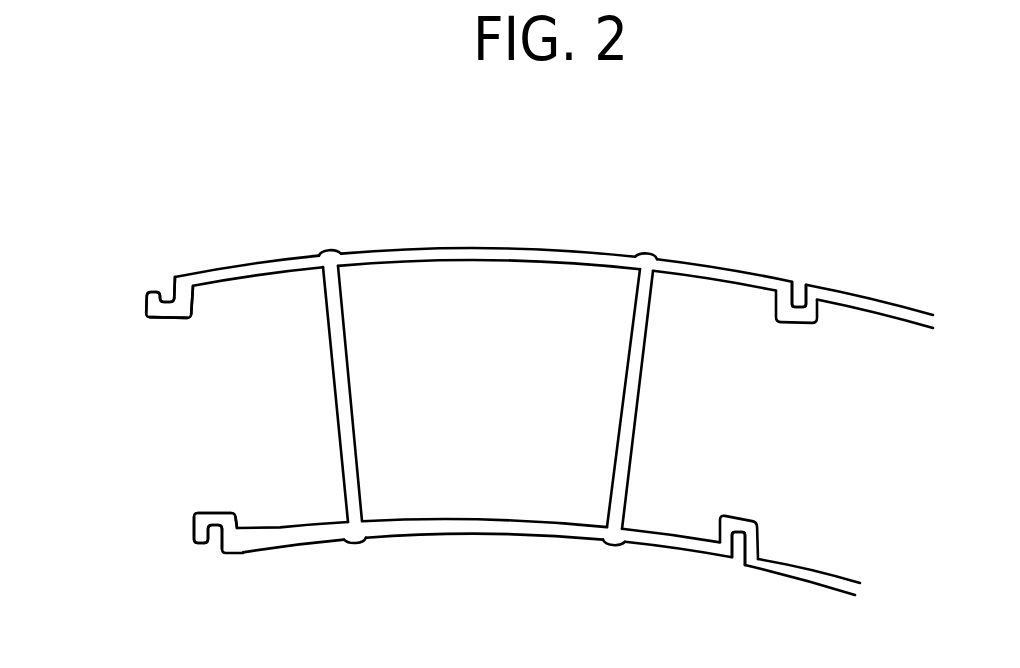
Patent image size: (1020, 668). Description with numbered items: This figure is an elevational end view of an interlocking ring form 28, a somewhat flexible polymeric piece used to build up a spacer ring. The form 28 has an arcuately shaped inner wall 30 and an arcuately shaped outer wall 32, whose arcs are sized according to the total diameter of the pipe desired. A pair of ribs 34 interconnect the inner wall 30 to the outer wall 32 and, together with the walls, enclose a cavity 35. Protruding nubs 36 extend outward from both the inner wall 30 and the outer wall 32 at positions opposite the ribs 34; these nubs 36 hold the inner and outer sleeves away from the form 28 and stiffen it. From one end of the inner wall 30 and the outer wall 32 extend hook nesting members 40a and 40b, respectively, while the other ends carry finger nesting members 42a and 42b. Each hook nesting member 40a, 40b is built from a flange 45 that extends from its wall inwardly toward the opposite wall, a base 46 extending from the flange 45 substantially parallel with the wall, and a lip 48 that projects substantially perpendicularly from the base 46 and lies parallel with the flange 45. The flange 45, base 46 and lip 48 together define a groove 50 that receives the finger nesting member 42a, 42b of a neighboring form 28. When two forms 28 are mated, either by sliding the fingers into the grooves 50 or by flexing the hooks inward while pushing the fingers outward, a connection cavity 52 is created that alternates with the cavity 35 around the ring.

The interlocking ring form 28 is at (556, 224).
The inner wall 30 is at (500, 536).
The outer wall 32 is at (368, 252).
The ribs 34 is at (337, 400).
The cavity 35 is at (575, 303).
The protruding nubs 36 is at (662, 255).
The hook nesting member 40a is at (185, 558).
The hook nesting member 40b is at (140, 283).
The finger nesting member 42a is at (743, 552).
The finger nesting member 42b is at (800, 298).
The flange 45 is at (193, 295).
The base 46 is at (176, 318).
The lip 48 is at (147, 317).
The groove 50 is at (166, 290).
The connection cavity 52 is at (820, 426).